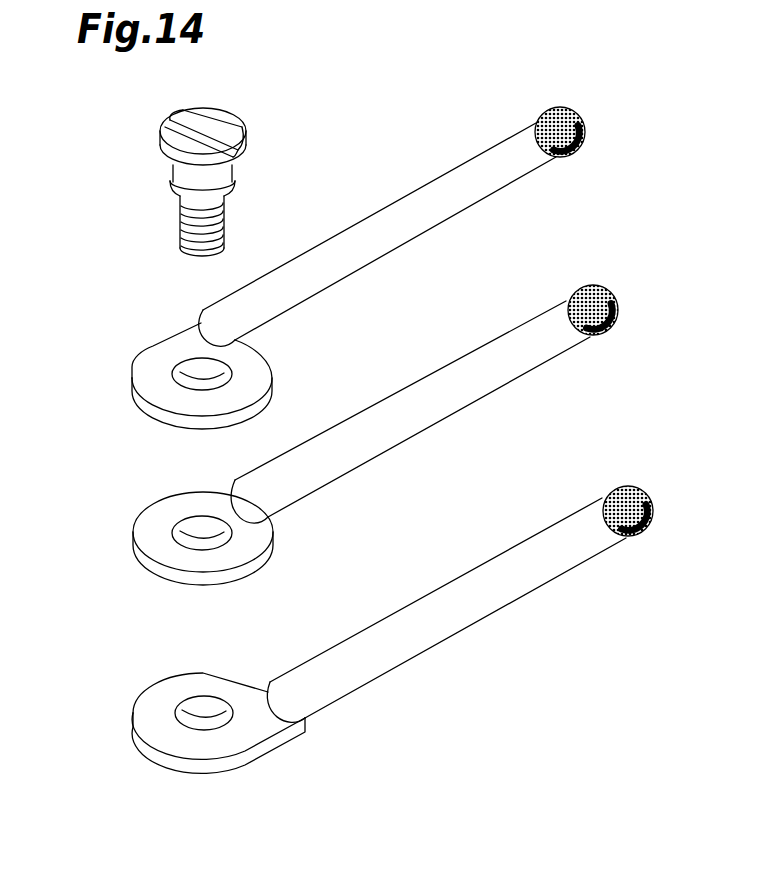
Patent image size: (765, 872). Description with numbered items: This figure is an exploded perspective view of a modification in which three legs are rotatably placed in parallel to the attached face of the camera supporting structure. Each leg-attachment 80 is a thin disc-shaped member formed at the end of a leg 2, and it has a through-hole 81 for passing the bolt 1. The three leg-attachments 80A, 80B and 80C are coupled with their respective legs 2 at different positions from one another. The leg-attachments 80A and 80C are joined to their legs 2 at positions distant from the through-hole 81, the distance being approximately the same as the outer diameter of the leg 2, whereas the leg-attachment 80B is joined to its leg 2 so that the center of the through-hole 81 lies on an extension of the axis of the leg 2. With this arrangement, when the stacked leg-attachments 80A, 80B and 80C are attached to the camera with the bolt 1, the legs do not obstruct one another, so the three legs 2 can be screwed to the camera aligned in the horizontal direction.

The bolt 1 is at (240, 121).
The leg 2 is at (508, 603).
The leg-attachment 80 is at (333, 646).
The leg-attachment 80A is at (270, 742).
The leg-attachment 80B is at (133, 540).
The leg-attachment 80C is at (133, 363).
The through-hole 81 is at (187, 698).